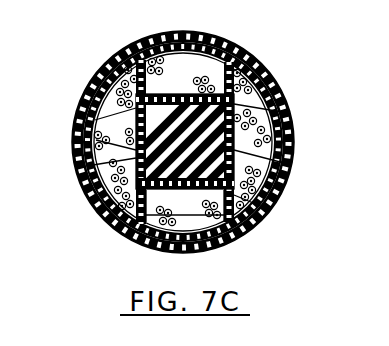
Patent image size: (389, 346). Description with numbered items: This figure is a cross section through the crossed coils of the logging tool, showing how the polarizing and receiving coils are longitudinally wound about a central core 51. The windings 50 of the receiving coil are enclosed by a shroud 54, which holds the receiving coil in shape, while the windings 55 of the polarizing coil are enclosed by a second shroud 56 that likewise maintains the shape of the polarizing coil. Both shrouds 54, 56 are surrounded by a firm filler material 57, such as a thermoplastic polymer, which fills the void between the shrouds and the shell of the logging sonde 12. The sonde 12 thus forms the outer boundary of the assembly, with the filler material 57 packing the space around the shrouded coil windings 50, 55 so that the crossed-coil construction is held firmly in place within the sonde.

The logging sonde 12 is at (280, 82).
The windings of the receiving coil 50 is at (198, 76).
The central core 51 is at (136, 119).
The shroud 54 is at (114, 262).
The windings of the polarizing coil 55 is at (281, 110).
The second shroud 56 is at (284, 163).
The firm filler material 57 is at (279, 206).